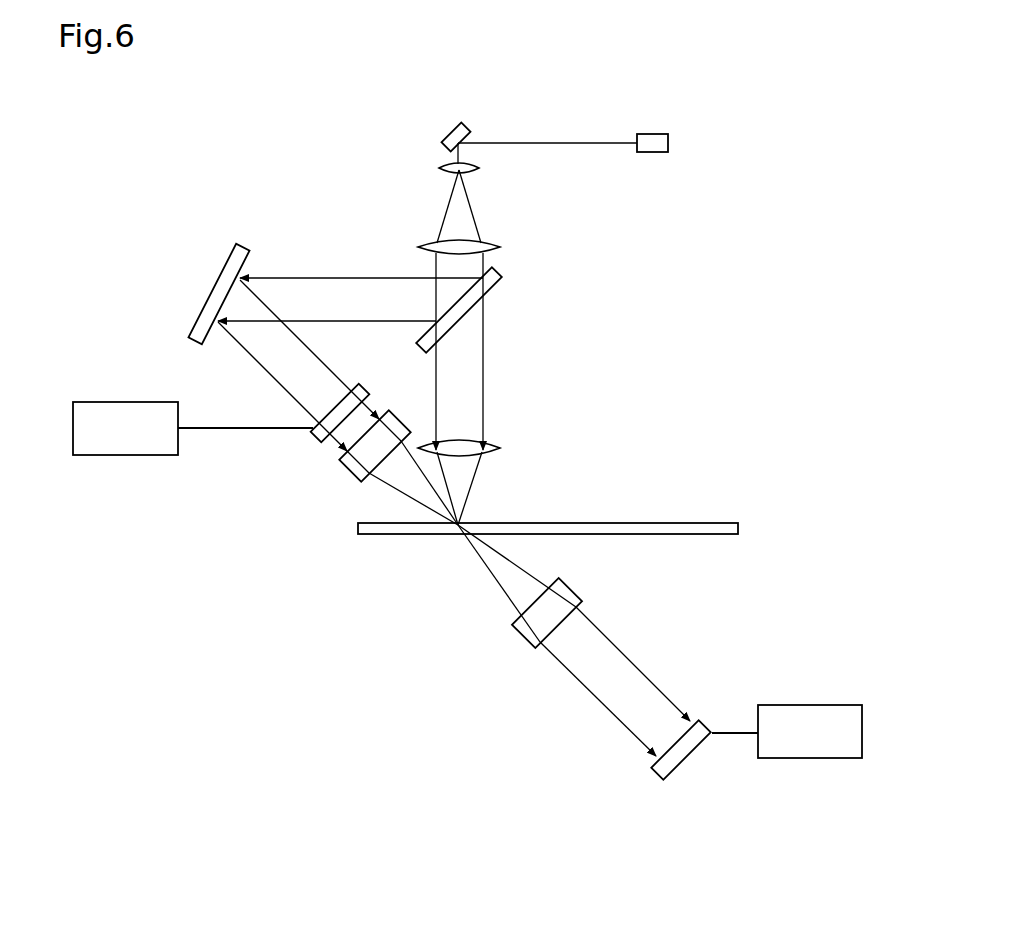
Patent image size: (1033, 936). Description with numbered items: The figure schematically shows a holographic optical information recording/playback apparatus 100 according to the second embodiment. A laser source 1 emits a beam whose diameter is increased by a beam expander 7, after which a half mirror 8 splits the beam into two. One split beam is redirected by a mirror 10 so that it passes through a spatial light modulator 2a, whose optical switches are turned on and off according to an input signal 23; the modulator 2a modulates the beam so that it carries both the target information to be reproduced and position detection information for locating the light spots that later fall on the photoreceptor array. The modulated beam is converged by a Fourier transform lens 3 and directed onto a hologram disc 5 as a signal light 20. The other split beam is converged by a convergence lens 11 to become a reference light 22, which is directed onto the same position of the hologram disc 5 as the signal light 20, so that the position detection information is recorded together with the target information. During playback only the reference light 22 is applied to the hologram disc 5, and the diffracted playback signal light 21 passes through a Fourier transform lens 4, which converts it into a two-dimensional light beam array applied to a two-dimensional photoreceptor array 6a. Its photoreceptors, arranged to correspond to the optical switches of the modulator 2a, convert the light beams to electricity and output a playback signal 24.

The laser source 1 is at (668, 143).
The beam expander 7 is at (513, 162).
The half mirror 8 is at (506, 283).
The mirror 10 is at (238, 244).
The convergence lens 11 is at (502, 445).
The reference light 22 is at (473, 485).
The hologram disc 5 is at (708, 523).
The input signal 23 is at (95, 402).
The spatial light modulator 2a is at (312, 444).
The Fourier transform lens 3 is at (352, 490).
The signal light 20 is at (407, 493).
The playback signal light 21 is at (492, 575).
The Fourier transform lens 4 is at (575, 587).
The two-dimensional photoreceptor array 6a is at (653, 775).
The playback signal 24 is at (773, 758).
The holographic optical information recording/playback apparatus 100 is at (53, 752).